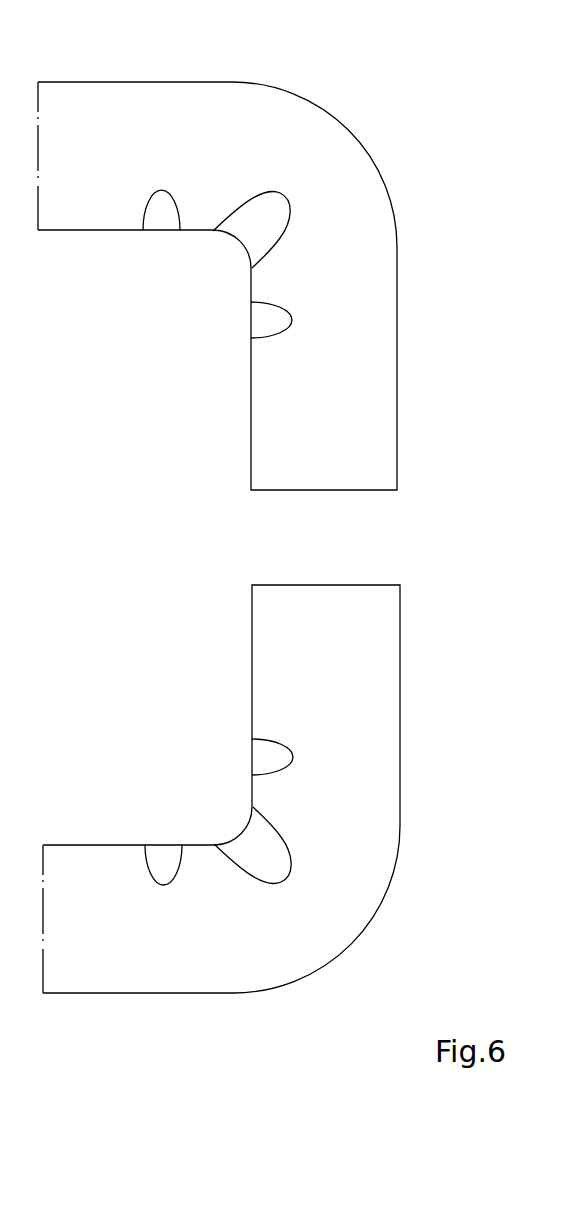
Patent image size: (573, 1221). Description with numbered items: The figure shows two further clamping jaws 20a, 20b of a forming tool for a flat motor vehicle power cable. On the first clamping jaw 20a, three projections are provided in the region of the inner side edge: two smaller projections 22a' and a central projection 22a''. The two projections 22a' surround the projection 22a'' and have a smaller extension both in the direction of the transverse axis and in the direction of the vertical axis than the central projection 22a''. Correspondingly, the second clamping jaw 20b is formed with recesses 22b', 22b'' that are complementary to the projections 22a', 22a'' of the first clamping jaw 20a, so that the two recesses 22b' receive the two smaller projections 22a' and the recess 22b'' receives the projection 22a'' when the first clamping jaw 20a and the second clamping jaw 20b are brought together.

The first clamping jaw 20a is at (133, 97).
The projections 22a' is at (194, 281).
The projection 22a'' is at (286, 229).
The second clamping jaw 20b is at (133, 980).
The recesses 22b' is at (196, 797).
The recess 22b'' is at (287, 845).